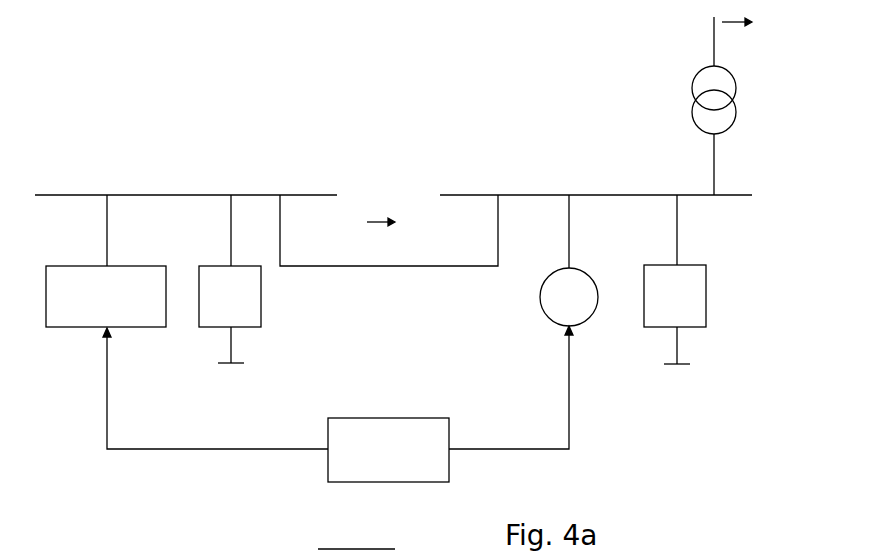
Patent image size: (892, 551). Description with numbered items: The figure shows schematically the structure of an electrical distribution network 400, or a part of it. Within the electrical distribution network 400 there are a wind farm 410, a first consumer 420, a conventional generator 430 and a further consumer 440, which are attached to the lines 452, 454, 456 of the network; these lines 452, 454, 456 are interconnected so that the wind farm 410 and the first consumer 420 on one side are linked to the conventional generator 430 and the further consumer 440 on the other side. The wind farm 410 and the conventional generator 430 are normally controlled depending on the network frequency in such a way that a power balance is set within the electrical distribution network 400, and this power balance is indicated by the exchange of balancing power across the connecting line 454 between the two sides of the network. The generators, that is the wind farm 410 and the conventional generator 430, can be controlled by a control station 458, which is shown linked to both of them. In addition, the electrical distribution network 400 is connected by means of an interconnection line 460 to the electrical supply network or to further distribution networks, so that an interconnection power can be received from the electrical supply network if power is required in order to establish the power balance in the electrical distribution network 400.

The electrical distribution network 400 is at (570, 100).
The wind farm 410 is at (86, 340).
The first consumer 420 is at (219, 373).
The conventional generator 430 is at (545, 332).
The further consumer 440 is at (669, 378).
The line 452 is at (85, 195).
The line 454 is at (355, 266).
The line 456 is at (466, 195).
The control station 458 is at (338, 404).
The interconnection line 460 is at (735, 166).